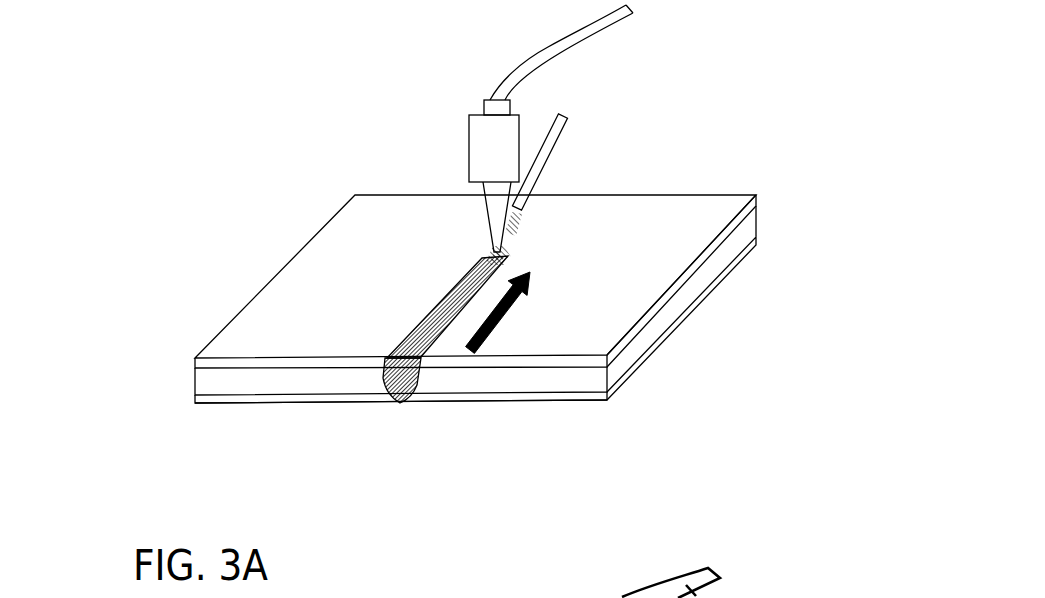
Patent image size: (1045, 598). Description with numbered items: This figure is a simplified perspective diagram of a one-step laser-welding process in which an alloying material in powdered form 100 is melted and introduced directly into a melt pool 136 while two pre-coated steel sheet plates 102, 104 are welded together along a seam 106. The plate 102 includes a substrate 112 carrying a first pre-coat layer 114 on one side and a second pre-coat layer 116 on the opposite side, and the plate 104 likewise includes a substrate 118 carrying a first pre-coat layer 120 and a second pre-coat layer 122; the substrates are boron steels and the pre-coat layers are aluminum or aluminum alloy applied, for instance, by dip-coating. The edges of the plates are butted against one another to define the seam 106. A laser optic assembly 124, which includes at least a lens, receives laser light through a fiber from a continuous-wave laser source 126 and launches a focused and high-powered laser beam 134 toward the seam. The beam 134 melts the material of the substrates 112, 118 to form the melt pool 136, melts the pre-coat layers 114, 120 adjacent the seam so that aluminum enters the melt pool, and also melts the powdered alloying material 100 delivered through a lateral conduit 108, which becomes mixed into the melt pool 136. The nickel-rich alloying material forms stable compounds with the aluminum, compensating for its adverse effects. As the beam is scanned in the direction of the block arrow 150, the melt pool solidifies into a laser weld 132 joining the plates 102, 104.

The alloying material in powdered form 100 is at (510, 233).
The pre-coated steel sheet plate 102 is at (347, 240).
The pre-coated steel sheet plate 104 is at (655, 202).
The seam 106 is at (530, 215).
The lateral conduit 108 is at (575, 118).
The substrate 112 is at (275, 382).
The first pre-coat layer 114 is at (230, 365).
The second pre-coat layer 116 is at (228, 400).
The substrate 118 is at (630, 353).
The first pre-coat layer 120 is at (688, 277).
The second pre-coat layer 122 is at (527, 400).
The laser optic assembly 124 is at (495, 152).
The laser source 126 is at (513, 72).
The laser weld 132 is at (436, 302).
The focused and high-powered laser beam 134 is at (490, 198).
The melt pool 136 is at (487, 260).
The block arrow 150 is at (513, 303).